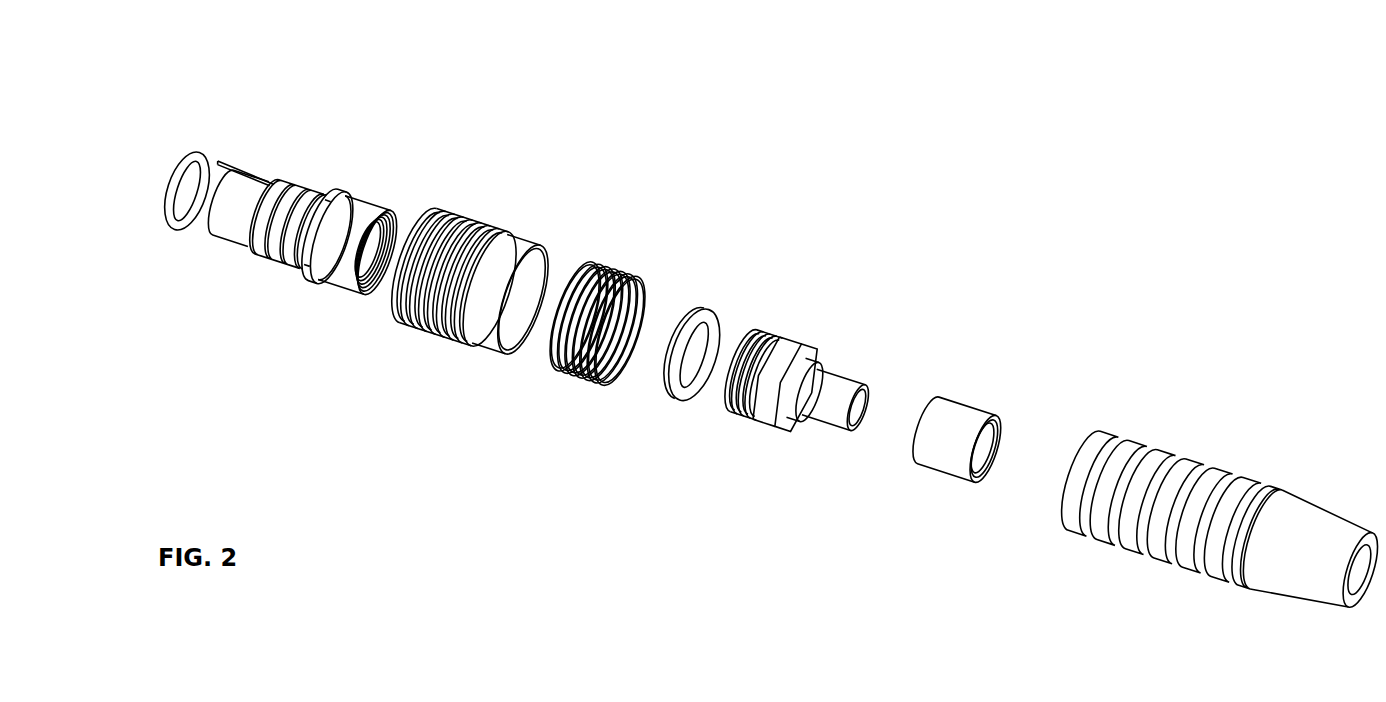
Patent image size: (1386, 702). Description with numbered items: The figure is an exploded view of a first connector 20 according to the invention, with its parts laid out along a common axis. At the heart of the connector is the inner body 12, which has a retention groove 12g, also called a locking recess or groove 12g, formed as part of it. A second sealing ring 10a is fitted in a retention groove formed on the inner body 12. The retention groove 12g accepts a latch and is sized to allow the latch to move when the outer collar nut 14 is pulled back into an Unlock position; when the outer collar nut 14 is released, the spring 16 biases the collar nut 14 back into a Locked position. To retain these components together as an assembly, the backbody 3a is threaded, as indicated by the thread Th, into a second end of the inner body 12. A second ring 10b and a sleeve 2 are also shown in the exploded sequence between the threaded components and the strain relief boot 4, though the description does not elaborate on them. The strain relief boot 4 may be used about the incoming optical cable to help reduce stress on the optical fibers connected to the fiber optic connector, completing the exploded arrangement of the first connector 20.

The first connector 20 is at (219, 29).
The second sealing ring 10a is at (199, 142).
The inner body 12 is at (298, 240).
The retention groove 12g is at (293, 251).
The outer collar nut 14 is at (470, 282).
The spring 16 is at (577, 391).
The sealing ring 10b is at (674, 412).
The backbody 3a is at (836, 325).
The sleeve 2 is at (950, 441).
The strain relief boot 4 is at (1287, 556).
The thread Th is at (320, 338).